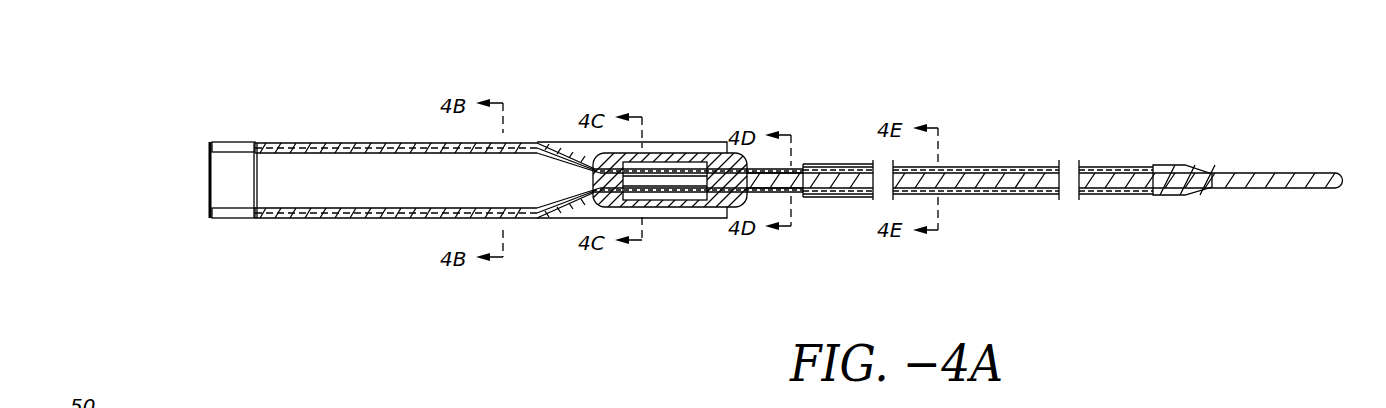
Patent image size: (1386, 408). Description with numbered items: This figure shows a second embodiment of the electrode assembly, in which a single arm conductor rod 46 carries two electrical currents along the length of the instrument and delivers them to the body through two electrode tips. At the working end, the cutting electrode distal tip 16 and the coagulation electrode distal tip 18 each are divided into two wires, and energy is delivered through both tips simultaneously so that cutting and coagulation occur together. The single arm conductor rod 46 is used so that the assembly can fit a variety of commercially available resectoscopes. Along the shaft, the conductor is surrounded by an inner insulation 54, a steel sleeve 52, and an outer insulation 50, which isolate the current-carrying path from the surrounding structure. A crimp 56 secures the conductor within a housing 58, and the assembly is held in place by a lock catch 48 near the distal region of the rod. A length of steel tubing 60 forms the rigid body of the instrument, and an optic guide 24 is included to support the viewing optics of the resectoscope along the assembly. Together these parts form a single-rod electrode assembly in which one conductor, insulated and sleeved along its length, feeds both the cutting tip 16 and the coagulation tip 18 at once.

The cutting electrode distal tip 16 is at (252, 178).
The coagulation electrode distal tip 18 is at (207, 178).
The optic guide 24 is at (565, 142).
The single arm conductor rod 46 is at (1263, 173).
The lock catch 48 is at (1173, 165).
The outer insulation 50 is at (333, 143).
The steel sleeve 52 is at (817, 167).
The inner insulation 54 is at (797, 167).
The crimp 56 is at (689, 153).
The housing 58 is at (675, 153).
The steel tubing 60 is at (391, 143).